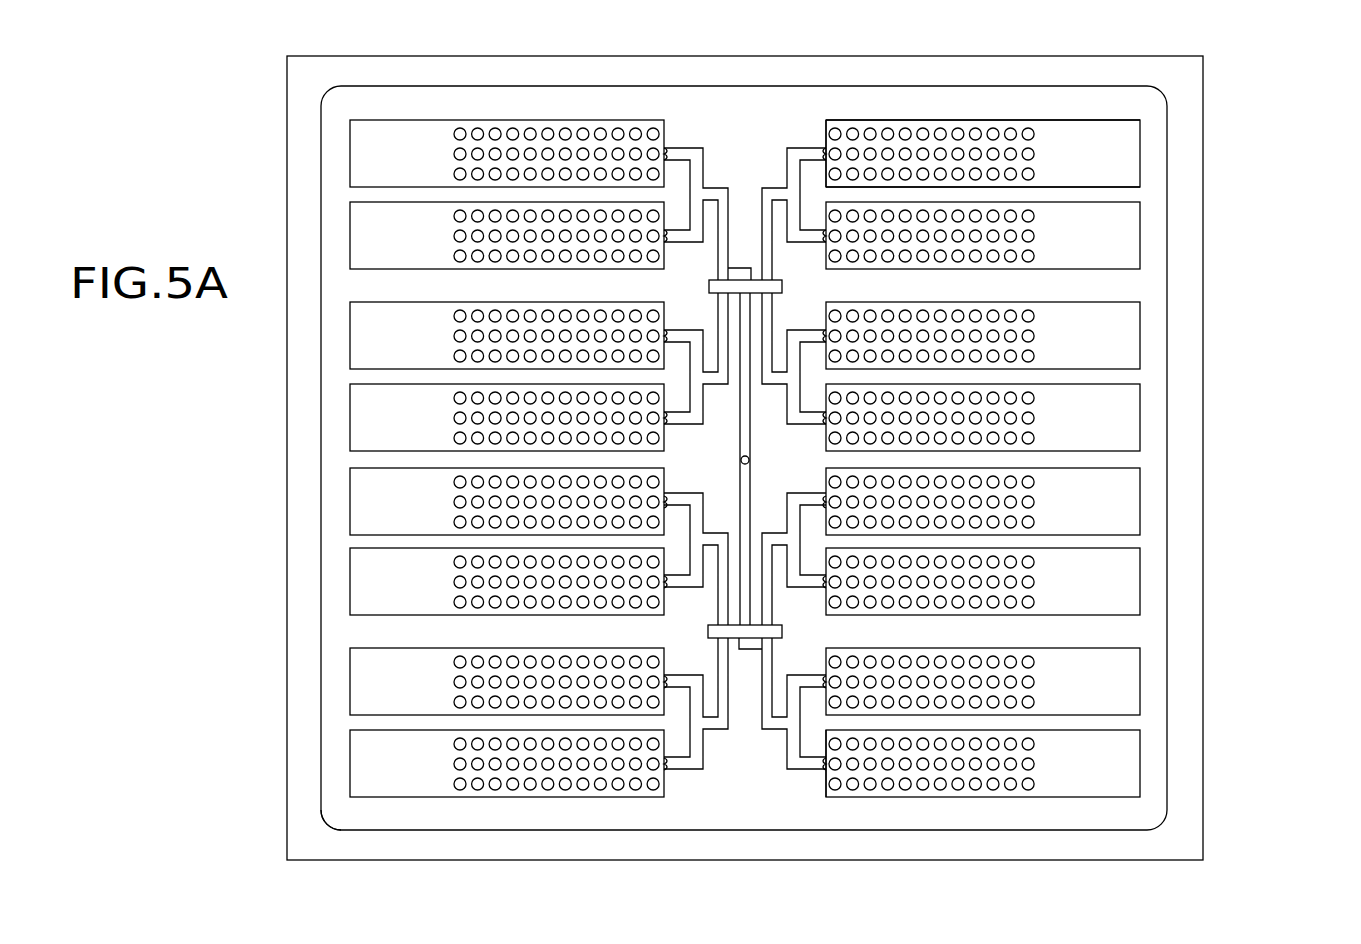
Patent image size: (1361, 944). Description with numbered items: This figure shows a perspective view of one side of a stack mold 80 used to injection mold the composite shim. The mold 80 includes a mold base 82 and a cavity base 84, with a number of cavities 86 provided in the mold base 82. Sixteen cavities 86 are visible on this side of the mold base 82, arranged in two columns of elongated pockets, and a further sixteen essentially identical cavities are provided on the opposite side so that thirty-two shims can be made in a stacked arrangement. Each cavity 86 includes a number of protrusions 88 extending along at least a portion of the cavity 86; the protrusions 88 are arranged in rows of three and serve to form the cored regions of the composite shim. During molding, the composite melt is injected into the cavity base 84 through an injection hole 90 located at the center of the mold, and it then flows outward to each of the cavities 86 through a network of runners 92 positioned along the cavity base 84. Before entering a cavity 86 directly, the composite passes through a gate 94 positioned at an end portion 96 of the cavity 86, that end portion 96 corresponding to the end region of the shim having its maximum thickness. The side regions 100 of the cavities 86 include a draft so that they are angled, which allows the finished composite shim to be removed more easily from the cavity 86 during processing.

The mold 80 is at (1220, 143).
The mold base 82 is at (1187, 424).
The cavity base 84 is at (343, 810).
The cavities 86 is at (415, 170).
The protrusions 88 is at (620, 127).
The injection hole 90 is at (740, 460).
The runners 92 is at (772, 186).
The gate 94 is at (826, 762).
The end portion 96 is at (824, 119).
The side regions 100 is at (1105, 119).